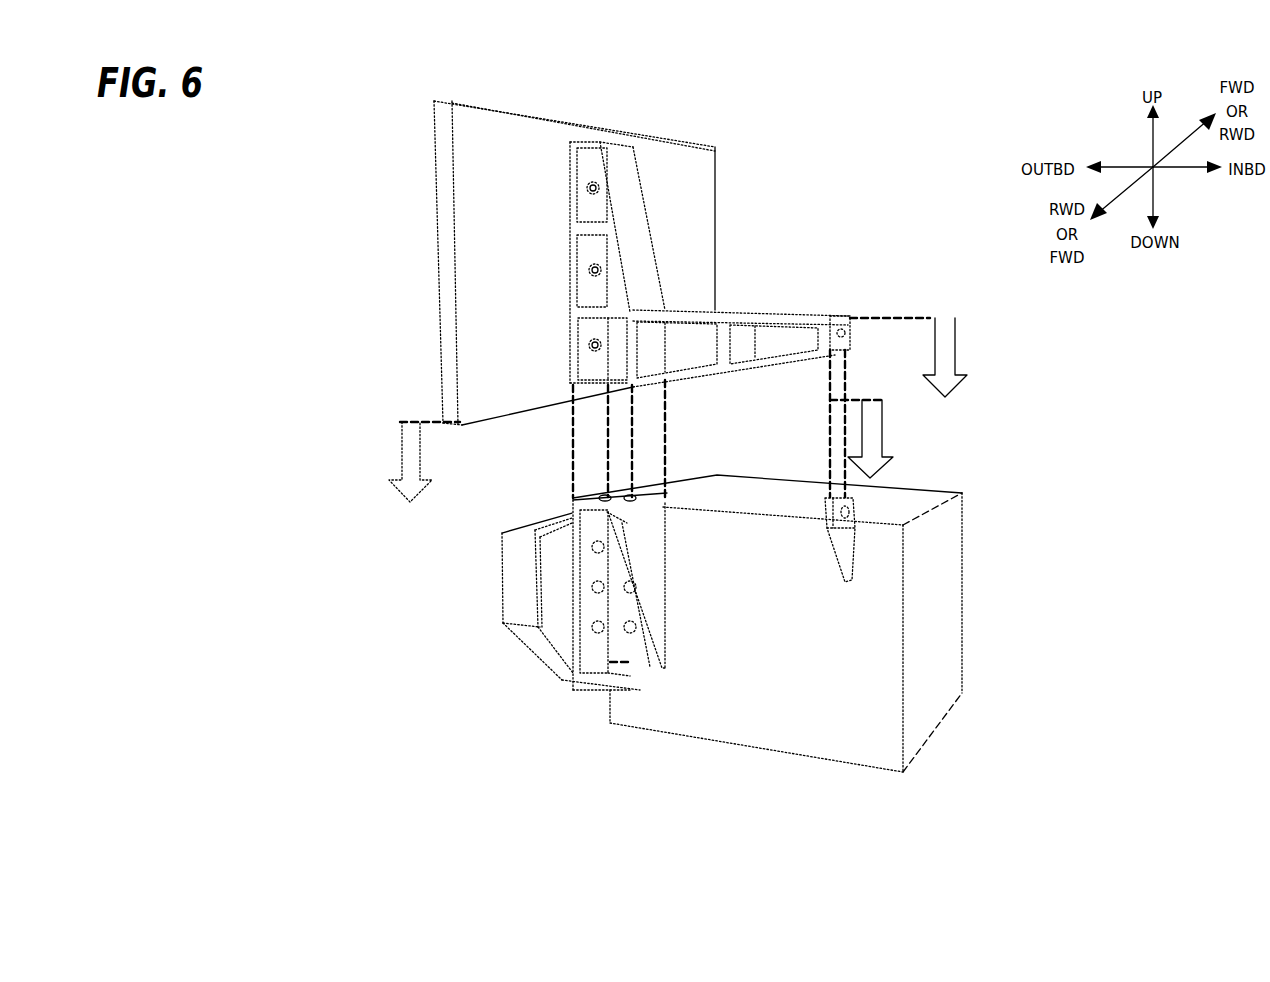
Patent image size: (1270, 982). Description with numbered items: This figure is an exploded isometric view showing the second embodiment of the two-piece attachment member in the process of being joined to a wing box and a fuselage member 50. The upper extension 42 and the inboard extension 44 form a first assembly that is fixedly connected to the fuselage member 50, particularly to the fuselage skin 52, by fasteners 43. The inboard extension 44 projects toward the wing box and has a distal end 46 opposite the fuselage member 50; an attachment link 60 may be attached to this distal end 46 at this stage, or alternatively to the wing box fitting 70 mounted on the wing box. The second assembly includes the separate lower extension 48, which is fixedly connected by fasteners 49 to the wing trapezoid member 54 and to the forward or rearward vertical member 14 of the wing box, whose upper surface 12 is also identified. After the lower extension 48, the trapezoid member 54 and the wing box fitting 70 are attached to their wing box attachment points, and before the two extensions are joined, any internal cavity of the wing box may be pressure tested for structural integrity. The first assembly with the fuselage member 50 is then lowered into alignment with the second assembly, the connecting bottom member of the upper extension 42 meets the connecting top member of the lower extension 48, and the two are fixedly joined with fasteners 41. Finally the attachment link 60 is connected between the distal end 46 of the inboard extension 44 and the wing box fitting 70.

The upper surface 12 is at (907, 515).
The vertical member 14 is at (715, 672).
The fasteners 41 is at (600, 372).
The upper extension 42 is at (618, 180).
The fasteners 43 is at (596, 346).
The inboard extension 44 is at (730, 310).
The distal end 46 is at (838, 318).
The lower extension 48 is at (637, 653).
The fasteners 49 is at (628, 630).
The fuselage member 50 is at (280, 462).
The fuselage skin 52 is at (445, 265).
The trapezoid member 54 is at (518, 590).
The extension link 60 is at (838, 368).
The wing box fitting 70 is at (843, 540).